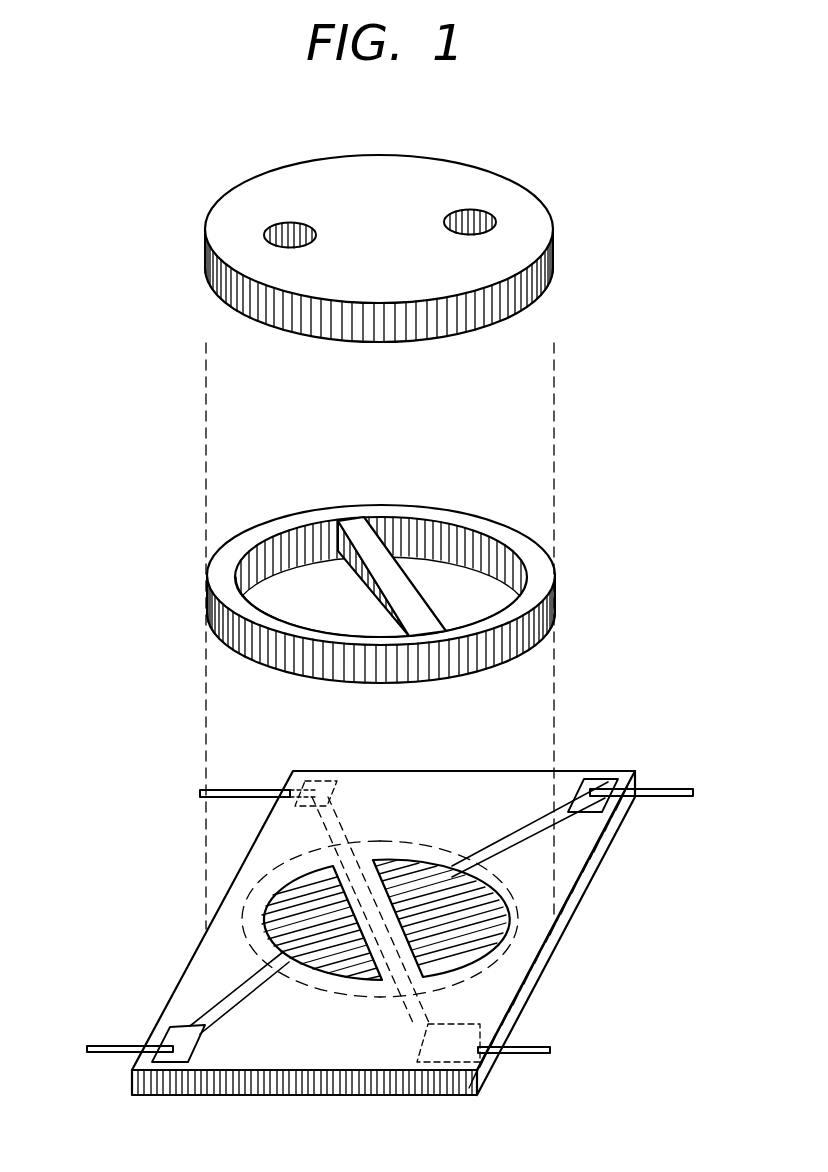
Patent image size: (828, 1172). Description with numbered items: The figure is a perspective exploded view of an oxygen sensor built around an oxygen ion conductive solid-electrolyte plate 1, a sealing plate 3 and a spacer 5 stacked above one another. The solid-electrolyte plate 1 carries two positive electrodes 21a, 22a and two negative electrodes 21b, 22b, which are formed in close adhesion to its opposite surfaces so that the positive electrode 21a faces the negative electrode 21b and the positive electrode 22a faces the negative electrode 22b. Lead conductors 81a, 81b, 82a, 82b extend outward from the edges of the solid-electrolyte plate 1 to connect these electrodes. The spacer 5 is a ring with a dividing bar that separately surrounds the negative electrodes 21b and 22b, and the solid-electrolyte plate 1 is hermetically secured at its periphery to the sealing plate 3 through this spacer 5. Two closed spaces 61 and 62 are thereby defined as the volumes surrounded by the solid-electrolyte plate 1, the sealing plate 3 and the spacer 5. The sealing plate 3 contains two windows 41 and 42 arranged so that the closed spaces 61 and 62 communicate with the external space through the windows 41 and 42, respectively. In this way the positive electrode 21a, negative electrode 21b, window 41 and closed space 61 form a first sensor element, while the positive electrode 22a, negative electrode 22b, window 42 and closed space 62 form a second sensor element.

The solid-electrolyte plate 1 is at (388, 942).
The sealing plate 3 is at (394, 237).
The window 41 is at (276, 229).
The window 42 is at (471, 212).
The spacer 5 is at (353, 577).
The closed space 61 is at (280, 580).
The closed space 62 is at (460, 568).
The positive electrode 21a is at (309, 988).
The positive electrode 22a is at (513, 945).
The negative electrode 21b is at (277, 915).
The negative electrode 22b is at (433, 870).
The lead terminal 81a is at (200, 793).
The lead terminal 81b is at (95, 1052).
The lead terminal 82a is at (537, 1057).
The lead terminal 82b is at (688, 790).